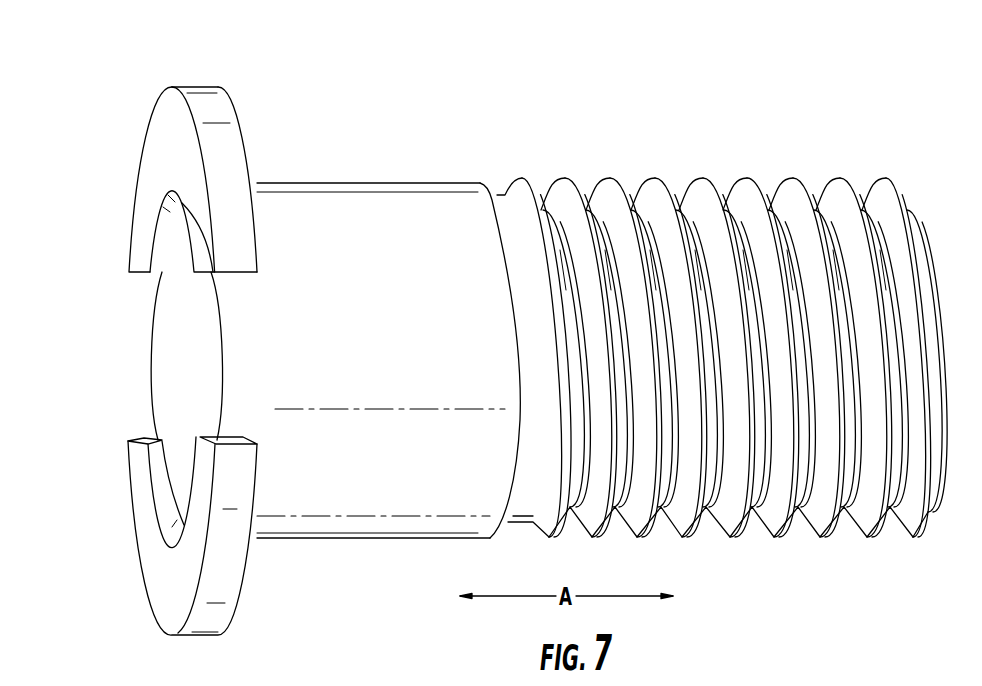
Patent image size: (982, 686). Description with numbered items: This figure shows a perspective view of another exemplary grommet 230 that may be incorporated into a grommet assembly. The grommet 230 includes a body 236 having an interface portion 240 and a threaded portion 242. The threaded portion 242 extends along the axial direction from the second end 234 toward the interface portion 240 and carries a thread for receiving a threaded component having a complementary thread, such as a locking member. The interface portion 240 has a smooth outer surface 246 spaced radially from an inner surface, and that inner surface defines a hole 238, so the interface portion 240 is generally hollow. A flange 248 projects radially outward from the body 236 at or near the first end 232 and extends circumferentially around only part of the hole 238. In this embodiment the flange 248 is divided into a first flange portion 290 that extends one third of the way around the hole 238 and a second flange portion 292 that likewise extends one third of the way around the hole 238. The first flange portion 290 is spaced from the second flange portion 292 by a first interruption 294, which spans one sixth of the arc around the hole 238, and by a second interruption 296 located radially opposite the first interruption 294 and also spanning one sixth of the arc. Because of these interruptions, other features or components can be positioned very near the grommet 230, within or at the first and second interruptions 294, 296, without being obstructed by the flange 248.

The grommet 230 is at (273, 75).
The first end 232 is at (157, 68).
The second end 234 is at (887, 177).
The body 236 is at (320, 183).
The hole 238 is at (188, 340).
The interface portion 240 is at (290, 237).
The threaded portion 242 is at (737, 177).
The outer surface 246 is at (393, 182).
The flange 248 is at (123, 550).
The first flange portion 290 is at (155, 148).
The second flange portion 292 is at (155, 587).
The first interruption 294 is at (133, 383).
The second interruption 296 is at (213, 315).